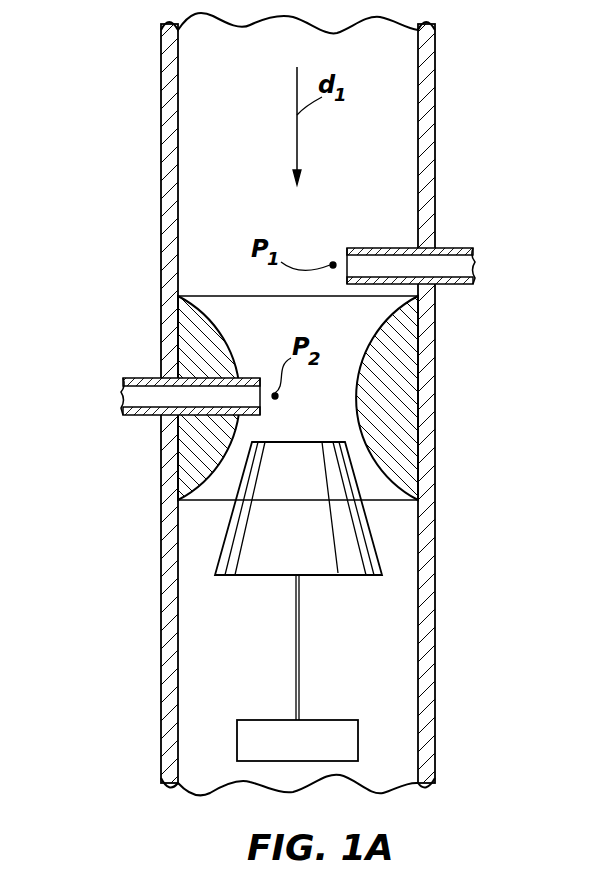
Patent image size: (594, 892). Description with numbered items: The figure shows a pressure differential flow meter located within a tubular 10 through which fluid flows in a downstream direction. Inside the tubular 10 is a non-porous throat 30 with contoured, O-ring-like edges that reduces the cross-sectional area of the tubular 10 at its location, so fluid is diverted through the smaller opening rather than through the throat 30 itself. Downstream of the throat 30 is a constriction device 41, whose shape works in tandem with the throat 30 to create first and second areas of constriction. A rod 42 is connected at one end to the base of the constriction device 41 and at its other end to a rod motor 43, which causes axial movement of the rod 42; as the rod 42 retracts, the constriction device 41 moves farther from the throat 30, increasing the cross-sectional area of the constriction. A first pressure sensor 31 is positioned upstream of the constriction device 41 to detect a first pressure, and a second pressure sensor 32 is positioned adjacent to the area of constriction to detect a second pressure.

The tubular 10 is at (435, 81).
The throat 30 is at (188, 340).
The first pressure sensor 31 is at (455, 247).
The second pressure sensor 32 is at (133, 416).
The constriction device 41 is at (298, 508).
The rod 42 is at (298, 622).
The rod motor 43 is at (297, 740).